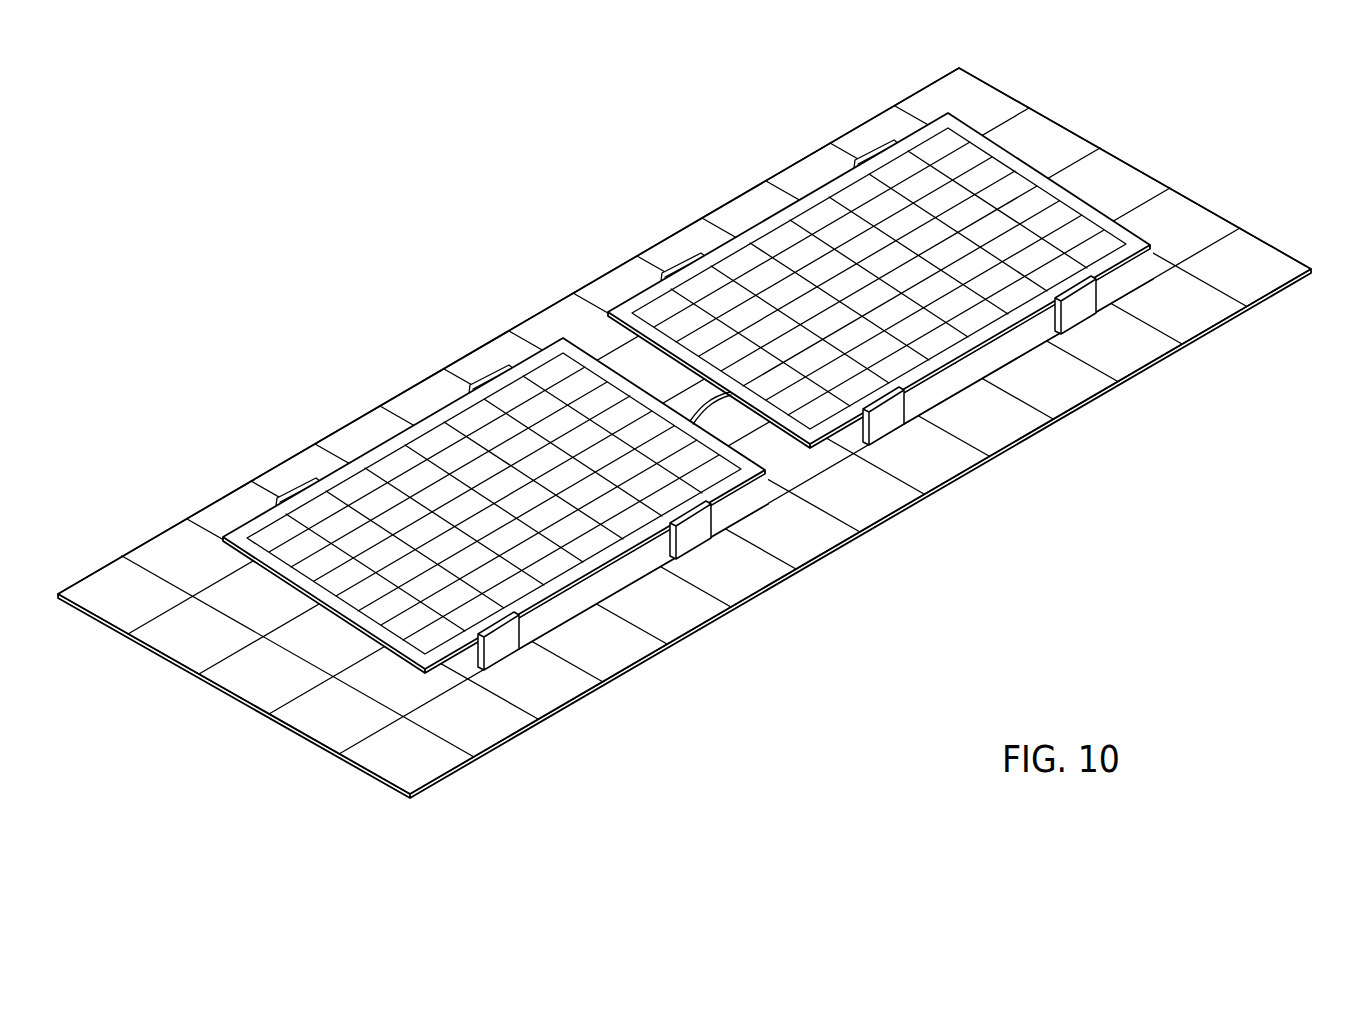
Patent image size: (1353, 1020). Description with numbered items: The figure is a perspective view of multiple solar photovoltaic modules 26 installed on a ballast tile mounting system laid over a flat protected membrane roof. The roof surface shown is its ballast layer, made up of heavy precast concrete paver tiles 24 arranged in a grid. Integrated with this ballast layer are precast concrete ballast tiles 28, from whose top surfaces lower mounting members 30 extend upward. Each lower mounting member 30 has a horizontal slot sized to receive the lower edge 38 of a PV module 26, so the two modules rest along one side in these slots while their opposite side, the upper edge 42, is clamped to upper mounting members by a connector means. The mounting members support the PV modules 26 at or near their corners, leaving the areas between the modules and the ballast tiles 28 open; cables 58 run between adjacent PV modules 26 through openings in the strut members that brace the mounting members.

The concrete paver tiles 24 is at (808, 465).
The solar photovoltaic (PV) modules 26 is at (821, 213).
The ballast tiles 28 is at (615, 572).
The lower mounting member 30 is at (1075, 308).
The lower edge 38 is at (993, 347).
The upper edge 42 is at (421, 408).
The cables 58 is at (693, 397).